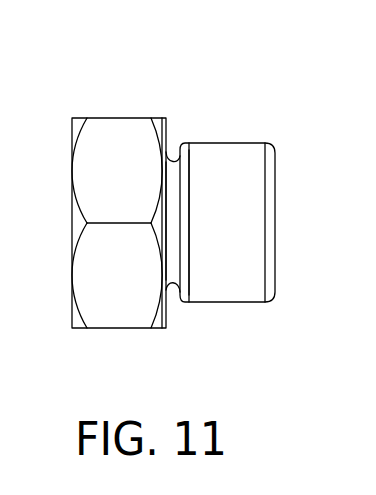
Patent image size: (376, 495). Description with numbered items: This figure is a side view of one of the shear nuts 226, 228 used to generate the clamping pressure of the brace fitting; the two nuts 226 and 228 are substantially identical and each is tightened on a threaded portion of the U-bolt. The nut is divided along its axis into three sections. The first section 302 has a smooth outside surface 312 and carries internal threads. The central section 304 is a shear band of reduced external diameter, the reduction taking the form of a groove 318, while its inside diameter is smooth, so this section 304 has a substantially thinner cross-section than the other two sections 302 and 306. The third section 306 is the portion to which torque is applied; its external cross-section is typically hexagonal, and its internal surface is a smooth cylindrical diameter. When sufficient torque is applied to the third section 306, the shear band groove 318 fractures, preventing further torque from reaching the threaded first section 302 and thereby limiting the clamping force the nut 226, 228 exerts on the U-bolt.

The nut 226 is at (65, 118).
The nut 228 is at (108, 253).
The first section 302 is at (232, 138).
The central section 304 is at (172, 128).
The third section 306 is at (113, 265).
The smooth outside surface 312 is at (232, 268).
The groove 318 is at (173, 232).